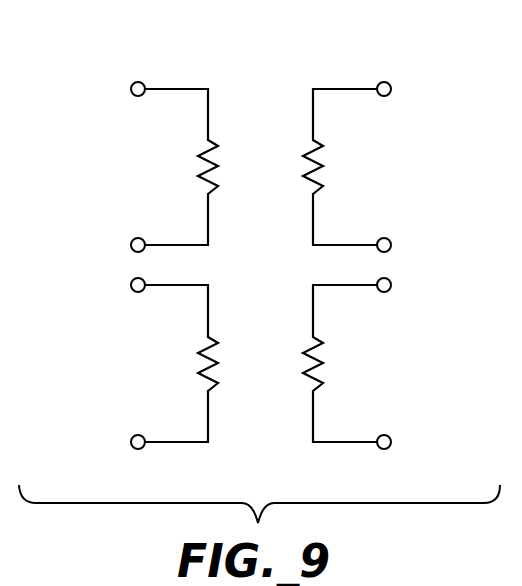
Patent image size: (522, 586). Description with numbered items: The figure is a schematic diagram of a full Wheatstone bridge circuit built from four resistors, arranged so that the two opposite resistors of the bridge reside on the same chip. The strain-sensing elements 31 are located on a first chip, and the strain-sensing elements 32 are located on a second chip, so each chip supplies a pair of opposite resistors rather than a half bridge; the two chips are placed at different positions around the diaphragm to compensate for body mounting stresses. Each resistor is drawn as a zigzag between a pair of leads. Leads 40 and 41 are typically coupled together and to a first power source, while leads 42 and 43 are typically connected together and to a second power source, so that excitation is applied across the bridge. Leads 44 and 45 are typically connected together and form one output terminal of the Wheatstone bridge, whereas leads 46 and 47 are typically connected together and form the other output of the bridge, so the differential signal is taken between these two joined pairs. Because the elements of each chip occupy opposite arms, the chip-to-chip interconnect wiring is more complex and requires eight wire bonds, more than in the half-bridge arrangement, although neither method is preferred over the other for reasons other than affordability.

The strain-sensing elements 31 is at (324, 162).
The strain-sensing elements 32 is at (198, 162).
The lead 40 is at (130, 88).
The lead 41 is at (392, 88).
The lead 42 is at (130, 441).
The lead 43 is at (392, 441).
The lead 44 is at (130, 244).
The lead 45 is at (130, 284).
The lead 46 is at (392, 244).
The lead 47 is at (392, 284).